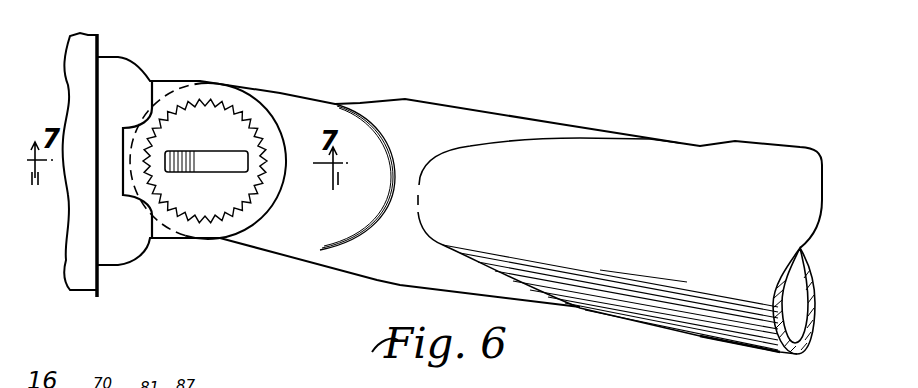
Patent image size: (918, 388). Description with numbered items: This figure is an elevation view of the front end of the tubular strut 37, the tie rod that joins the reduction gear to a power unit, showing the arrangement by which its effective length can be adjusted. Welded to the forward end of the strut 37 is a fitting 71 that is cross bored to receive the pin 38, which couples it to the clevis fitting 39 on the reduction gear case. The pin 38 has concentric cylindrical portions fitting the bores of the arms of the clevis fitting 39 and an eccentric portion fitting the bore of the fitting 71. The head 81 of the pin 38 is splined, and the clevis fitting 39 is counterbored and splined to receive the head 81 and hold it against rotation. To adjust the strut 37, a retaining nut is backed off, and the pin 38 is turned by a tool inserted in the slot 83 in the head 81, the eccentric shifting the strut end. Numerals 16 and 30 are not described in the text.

The wall plate 16 is at (66, 47).
The housing body 30 is at (118, 57).
The pin 38 is at (219, 119).
The slot 83 is at (240, 166).
The head 81 is at (192, 214).
The clevis fitting 39 is at (238, 222).
The fitting 71 is at (452, 112).
The strut 37 is at (765, 172).